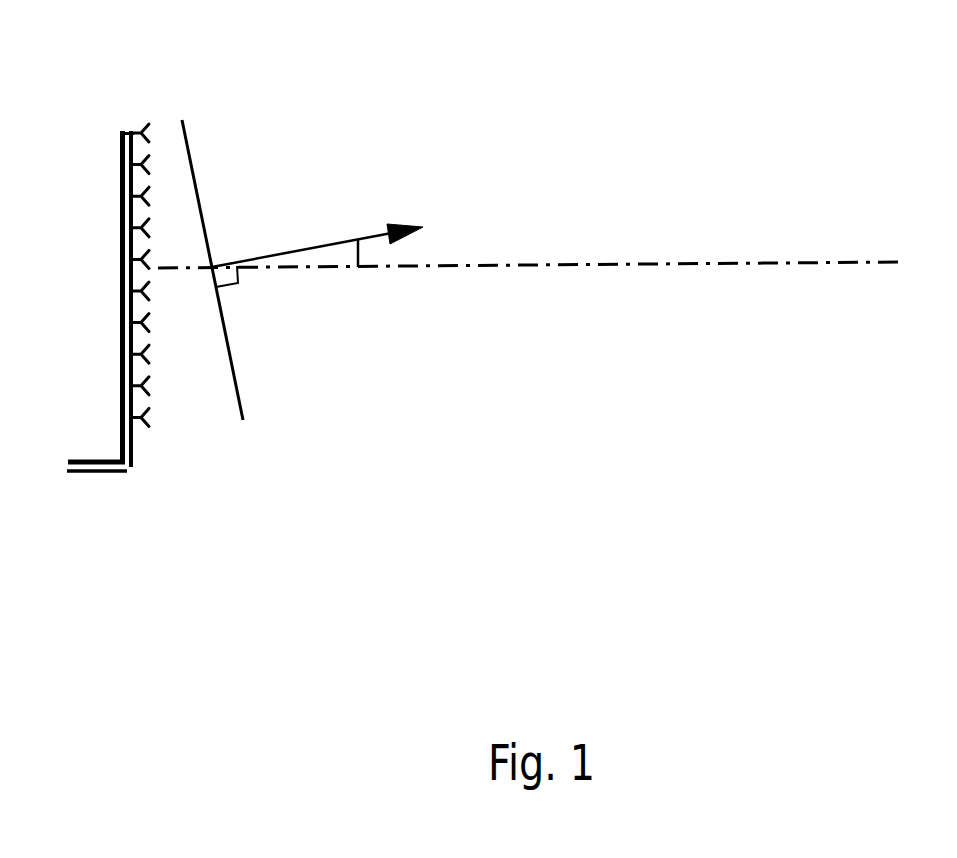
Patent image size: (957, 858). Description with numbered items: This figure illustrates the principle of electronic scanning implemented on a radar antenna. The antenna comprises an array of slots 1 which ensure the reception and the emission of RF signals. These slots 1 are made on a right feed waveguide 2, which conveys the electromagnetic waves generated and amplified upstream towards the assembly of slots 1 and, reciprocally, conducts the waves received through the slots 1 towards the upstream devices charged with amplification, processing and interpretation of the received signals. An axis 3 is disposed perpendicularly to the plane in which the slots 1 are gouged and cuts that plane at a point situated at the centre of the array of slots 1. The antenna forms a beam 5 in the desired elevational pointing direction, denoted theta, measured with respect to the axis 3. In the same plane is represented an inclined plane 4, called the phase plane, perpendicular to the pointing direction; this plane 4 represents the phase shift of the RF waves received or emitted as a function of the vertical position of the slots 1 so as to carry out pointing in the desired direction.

The slots 1 is at (148, 128).
The right feed waveguide 2 is at (98, 475).
The axis 3 is at (862, 262).
The inclined plane 4 is at (237, 395).
The beam 5 is at (367, 230).